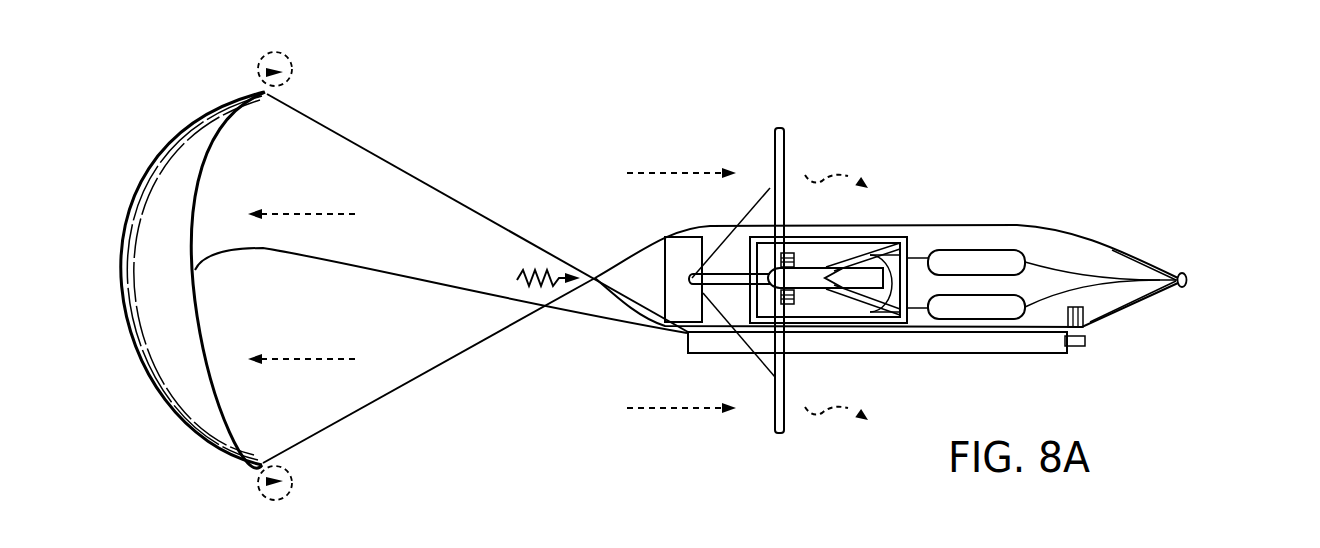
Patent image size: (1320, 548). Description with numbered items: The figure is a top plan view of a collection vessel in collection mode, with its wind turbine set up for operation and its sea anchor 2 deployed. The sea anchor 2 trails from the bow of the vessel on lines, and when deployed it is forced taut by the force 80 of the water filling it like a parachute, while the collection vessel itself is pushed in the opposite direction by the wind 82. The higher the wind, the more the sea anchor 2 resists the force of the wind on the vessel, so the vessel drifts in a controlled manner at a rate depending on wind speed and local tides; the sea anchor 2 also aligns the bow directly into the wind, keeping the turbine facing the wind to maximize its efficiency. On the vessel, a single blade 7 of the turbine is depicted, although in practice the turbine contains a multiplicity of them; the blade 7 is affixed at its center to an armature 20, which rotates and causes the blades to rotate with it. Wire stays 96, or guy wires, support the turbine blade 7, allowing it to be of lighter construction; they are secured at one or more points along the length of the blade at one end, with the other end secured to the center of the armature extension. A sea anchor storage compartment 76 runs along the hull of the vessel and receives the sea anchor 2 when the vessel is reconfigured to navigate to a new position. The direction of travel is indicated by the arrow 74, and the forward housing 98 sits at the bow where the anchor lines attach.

The sea anchor 2 is at (167, 285).
The blade 7 is at (786, 142).
The armature 20 is at (830, 262).
The direction of travel 74 is at (1240, 276).
The sea anchor storage compartment 76 is at (1017, 342).
The force of the water 80 is at (320, 287).
The wind 82 is at (664, 291).
The wire stays 96 is at (768, 185).
The forward housing 98 is at (727, 250).